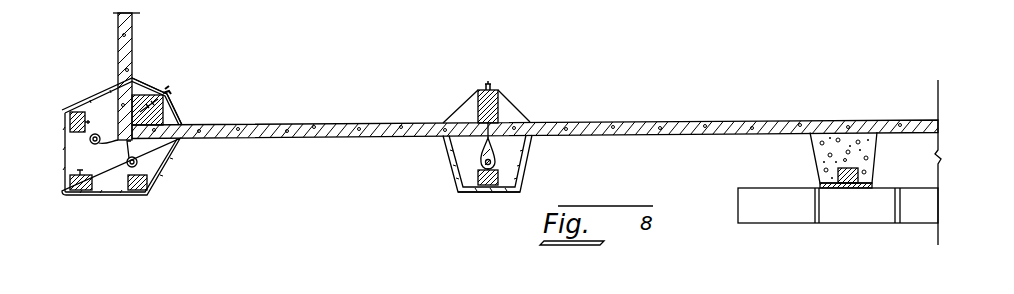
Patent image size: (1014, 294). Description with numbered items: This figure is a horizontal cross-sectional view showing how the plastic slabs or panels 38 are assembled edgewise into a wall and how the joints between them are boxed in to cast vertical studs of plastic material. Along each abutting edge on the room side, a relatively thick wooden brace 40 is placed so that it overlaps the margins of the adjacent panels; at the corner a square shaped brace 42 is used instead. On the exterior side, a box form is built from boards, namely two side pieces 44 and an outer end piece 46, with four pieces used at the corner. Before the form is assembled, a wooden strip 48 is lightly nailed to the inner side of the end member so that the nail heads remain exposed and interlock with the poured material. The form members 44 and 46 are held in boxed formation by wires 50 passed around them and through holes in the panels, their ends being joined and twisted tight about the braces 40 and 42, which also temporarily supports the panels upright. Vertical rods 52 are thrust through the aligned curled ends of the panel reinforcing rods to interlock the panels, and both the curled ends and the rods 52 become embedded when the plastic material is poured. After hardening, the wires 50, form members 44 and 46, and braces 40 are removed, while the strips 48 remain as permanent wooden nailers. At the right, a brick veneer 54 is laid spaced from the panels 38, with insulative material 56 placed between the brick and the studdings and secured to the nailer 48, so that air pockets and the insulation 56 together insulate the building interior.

The slab or panel 38 is at (288, 137).
The brace 40 is at (498, 108).
The square shaped brace 42 is at (152, 93).
The side piece 44 is at (84, 100).
The outer end piece 46 is at (460, 197).
The wooden strip 48 is at (482, 186).
The wire 50 is at (178, 115).
The vertical rod 52 is at (138, 160).
The brick veneer 54 is at (940, 197).
The insulative material 56 is at (875, 183).